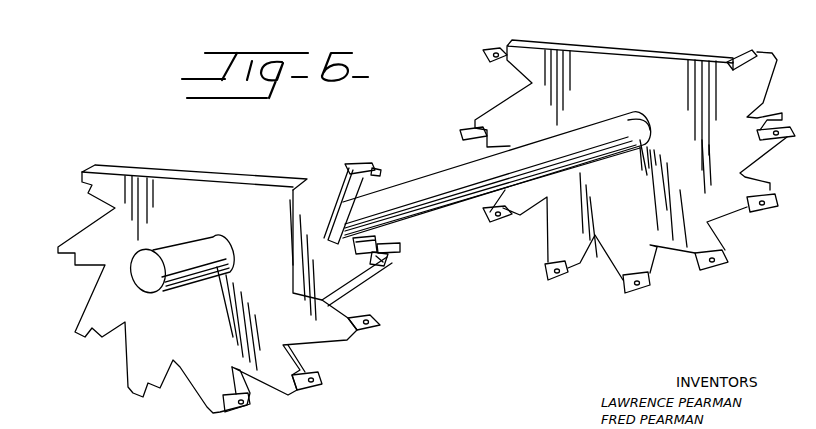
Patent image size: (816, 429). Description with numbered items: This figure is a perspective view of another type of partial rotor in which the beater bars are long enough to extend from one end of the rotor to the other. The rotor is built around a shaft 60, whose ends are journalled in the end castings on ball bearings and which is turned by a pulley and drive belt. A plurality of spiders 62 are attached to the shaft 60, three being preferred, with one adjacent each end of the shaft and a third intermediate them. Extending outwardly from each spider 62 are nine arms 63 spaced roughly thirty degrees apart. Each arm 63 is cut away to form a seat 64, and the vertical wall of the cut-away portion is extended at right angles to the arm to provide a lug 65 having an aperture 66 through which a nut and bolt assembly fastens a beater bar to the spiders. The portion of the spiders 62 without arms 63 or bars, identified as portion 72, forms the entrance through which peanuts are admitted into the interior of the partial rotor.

The shaft 60 is at (470, 192).
The spider 62 is at (188, 186).
The arm 63 is at (335, 178).
The seat 64 is at (372, 243).
The lug 65 is at (378, 172).
The aperture 66 is at (382, 256).
The portion of the spider not provided with supporting arms 72 is at (246, 178).